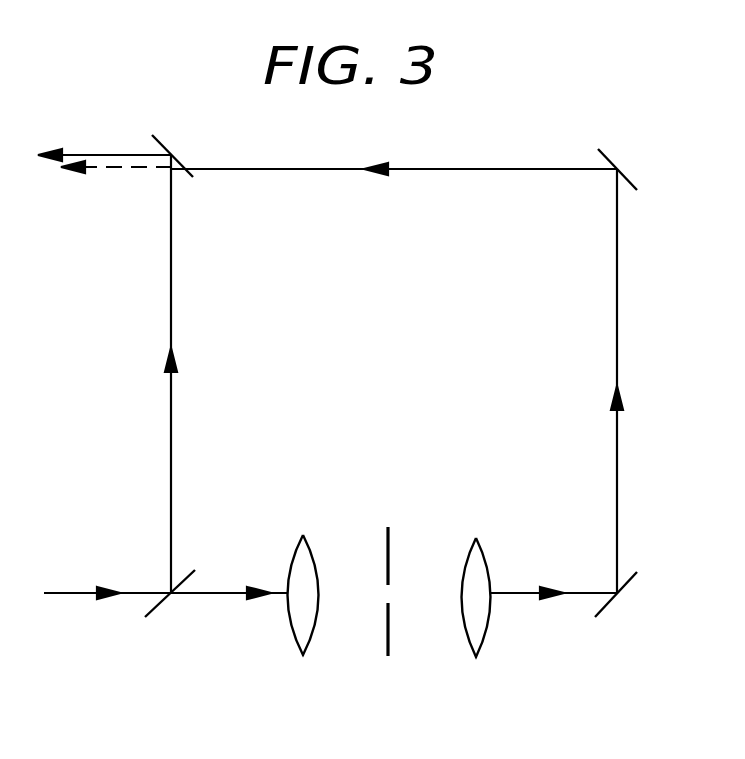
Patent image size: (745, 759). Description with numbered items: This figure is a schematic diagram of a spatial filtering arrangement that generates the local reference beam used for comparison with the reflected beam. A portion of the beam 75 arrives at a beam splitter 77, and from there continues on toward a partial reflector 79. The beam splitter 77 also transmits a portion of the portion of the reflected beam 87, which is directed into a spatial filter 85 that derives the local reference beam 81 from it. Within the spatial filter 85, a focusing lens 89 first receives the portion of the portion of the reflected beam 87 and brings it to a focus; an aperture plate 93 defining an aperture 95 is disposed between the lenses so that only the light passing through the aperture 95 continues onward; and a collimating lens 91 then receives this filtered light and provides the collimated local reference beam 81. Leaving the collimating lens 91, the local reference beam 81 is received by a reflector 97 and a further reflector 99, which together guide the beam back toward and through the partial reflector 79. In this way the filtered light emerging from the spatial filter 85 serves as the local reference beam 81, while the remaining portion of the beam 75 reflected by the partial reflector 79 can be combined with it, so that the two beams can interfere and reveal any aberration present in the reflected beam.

The portion of the beam 75 is at (93, 155).
The beam splitter 77 is at (155, 610).
The partial reflector 79 is at (168, 146).
The local reference beam 81 is at (108, 169).
The spatial filter 85 is at (355, 607).
The portion of the portion of the reflected beam 87 is at (222, 592).
The focusing lens 89 is at (292, 640).
The collimating lens 91 is at (481, 641).
The aperture plate 93 is at (390, 545).
The aperture 95 is at (366, 572).
The reflector 97 is at (628, 592).
The reflector 99 is at (628, 178).